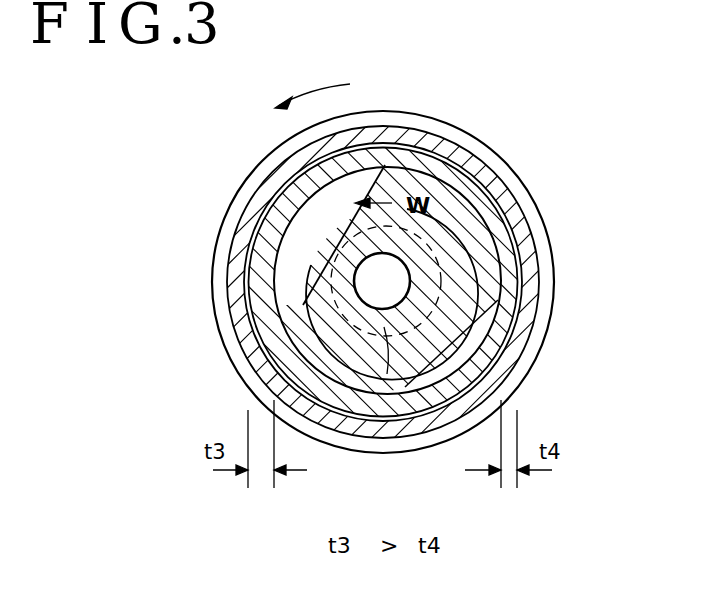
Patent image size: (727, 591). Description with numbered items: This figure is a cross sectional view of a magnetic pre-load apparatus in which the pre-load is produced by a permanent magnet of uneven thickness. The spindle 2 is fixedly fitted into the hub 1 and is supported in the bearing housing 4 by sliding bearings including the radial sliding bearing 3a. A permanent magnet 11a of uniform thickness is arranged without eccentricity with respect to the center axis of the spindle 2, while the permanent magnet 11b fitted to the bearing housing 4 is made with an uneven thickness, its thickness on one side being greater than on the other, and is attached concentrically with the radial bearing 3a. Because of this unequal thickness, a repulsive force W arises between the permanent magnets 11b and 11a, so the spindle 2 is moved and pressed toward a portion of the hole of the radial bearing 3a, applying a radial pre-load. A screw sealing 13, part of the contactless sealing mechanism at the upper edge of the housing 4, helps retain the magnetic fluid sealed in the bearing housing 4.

The hub 1 is at (245, 352).
The spindle 2 is at (413, 273).
The radial sliding bearing 3a is at (388, 446).
The bearing housing 4 is at (463, 212).
The permanent magnet 11a is at (238, 288).
The permanent magnet 11b is at (286, 200).
The screw sealing 13 is at (450, 250).